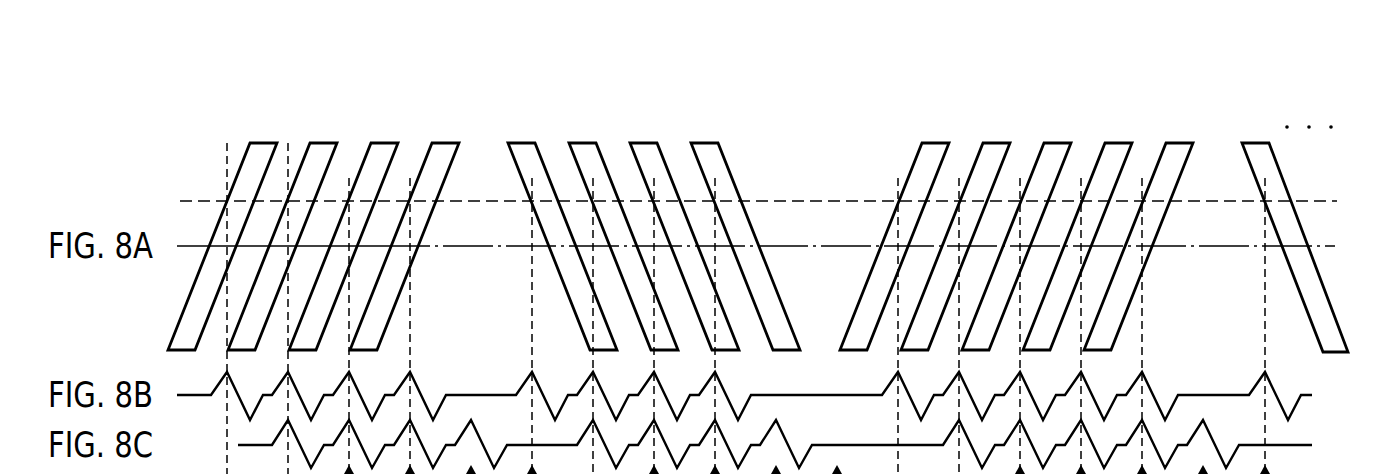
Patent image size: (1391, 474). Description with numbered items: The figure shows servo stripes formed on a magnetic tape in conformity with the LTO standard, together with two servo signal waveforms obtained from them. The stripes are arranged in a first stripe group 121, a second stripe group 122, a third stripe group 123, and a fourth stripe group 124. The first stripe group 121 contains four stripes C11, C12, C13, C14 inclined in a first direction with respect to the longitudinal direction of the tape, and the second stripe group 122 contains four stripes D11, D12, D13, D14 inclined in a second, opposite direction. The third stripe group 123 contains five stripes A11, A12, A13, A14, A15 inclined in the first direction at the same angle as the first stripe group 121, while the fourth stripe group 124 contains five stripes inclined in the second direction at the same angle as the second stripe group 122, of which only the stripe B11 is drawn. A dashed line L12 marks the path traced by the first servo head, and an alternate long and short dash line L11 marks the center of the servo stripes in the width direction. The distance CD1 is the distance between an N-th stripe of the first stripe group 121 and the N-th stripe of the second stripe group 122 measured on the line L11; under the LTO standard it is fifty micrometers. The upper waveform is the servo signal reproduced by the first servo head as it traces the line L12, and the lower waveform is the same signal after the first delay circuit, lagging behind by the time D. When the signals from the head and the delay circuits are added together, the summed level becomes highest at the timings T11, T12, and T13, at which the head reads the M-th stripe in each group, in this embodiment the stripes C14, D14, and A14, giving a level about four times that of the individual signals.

The first stripe group 121 is at (458, 110).
The second stripe group 122 is at (718, 110).
The third stripe group 123 is at (1197, 110).
The fourth stripe group 124 is at (1352, 110).
The stripe C11 is at (223, 232).
The stripe C12 is at (283, 232).
The stripe C13 is at (344, 232).
The stripe C14 is at (405, 232).
The stripe D11 is at (562, 232).
The stripe D12 is at (623, 232).
The stripe D13 is at (684, 232).
The stripe D14 is at (745, 232).
The stripe A11 is at (895, 232).
The stripe A12 is at (956, 232).
The stripe A13 is at (1017, 232).
The stripe A14 is at (1078, 232).
The stripe A15 is at (1139, 232).
The stripe B11 is at (1295, 233).
The time D is at (318, 150).
The distance CD1 is at (733, 254).
The timing T11 is at (410, 345).
The timing T12 is at (716, 360).
The timing T13 is at (1082, 355).
The alternate long and short dash line L11 is at (1335, 246).
The dashed line L12 is at (1337, 201).